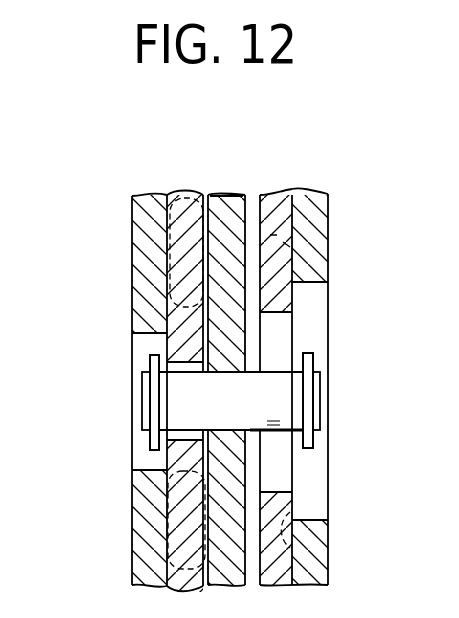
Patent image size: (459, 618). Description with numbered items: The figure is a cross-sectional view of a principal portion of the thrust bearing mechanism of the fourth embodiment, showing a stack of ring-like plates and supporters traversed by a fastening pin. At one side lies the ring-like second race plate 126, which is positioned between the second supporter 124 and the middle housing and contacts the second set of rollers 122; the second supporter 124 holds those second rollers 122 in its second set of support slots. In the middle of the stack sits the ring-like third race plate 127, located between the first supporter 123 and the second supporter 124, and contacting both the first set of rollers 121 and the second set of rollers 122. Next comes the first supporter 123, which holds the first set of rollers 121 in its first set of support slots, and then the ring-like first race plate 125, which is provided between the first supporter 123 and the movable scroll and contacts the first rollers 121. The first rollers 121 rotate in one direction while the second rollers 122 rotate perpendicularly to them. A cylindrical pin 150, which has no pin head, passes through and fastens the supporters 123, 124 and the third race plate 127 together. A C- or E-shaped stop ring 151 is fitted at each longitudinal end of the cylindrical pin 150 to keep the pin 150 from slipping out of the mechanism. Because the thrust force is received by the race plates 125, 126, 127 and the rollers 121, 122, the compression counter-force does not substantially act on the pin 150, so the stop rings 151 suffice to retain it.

The first set of rollers 121 is at (277, 274).
The second set of rollers 122 is at (207, 197).
The first supporter 123 is at (287, 197).
The second supporter 124 is at (173, 197).
The first race plate 125 is at (328, 205).
The second race plate 126 is at (143, 235).
The third race plate 127 is at (227, 210).
The cylindrical pin 150 is at (175, 397).
The stop ring 151 is at (143, 438).